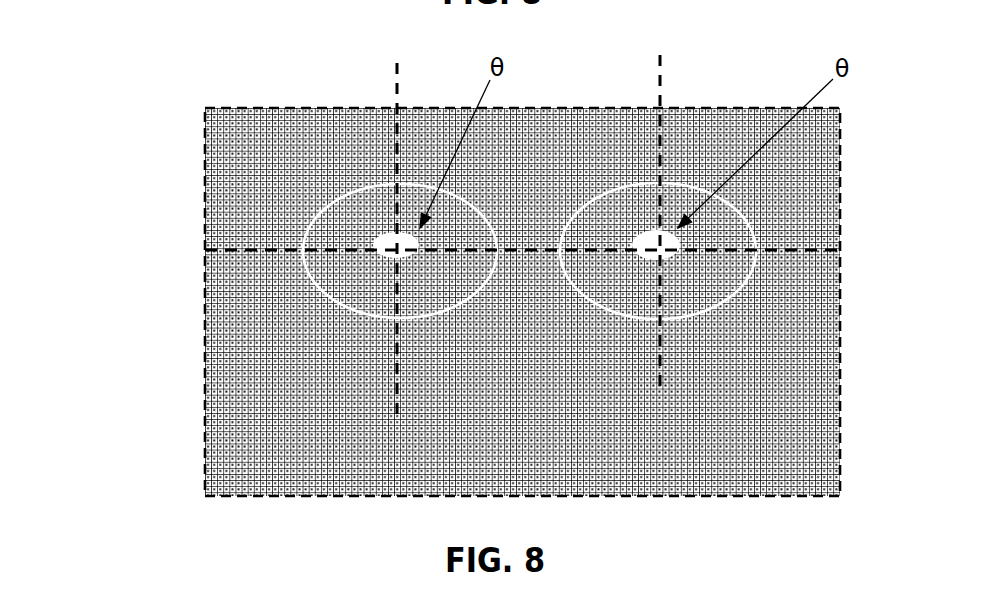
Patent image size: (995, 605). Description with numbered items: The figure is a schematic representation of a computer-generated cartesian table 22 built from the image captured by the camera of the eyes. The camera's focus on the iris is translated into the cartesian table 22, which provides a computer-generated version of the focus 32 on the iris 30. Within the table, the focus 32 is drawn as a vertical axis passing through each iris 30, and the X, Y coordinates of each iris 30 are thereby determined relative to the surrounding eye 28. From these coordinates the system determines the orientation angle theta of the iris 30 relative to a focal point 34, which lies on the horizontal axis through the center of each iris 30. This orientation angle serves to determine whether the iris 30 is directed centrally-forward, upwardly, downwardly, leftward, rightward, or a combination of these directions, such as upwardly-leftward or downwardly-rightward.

The cartesian table 22 is at (165, 192).
The eye 28 is at (342, 194).
The iris 30 is at (372, 238).
The focus 32 is at (365, 95).
The focal point 34 is at (382, 264).